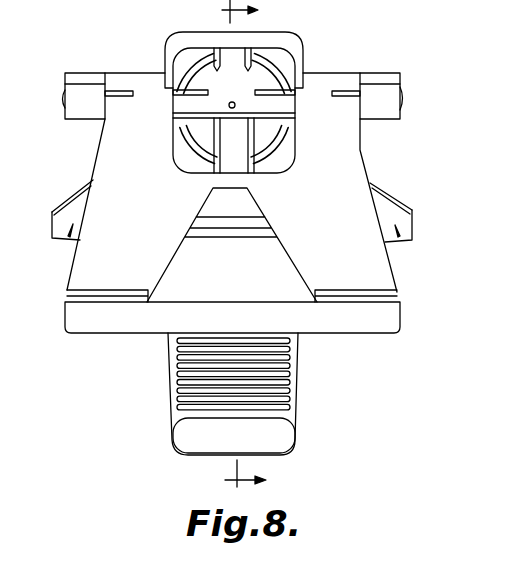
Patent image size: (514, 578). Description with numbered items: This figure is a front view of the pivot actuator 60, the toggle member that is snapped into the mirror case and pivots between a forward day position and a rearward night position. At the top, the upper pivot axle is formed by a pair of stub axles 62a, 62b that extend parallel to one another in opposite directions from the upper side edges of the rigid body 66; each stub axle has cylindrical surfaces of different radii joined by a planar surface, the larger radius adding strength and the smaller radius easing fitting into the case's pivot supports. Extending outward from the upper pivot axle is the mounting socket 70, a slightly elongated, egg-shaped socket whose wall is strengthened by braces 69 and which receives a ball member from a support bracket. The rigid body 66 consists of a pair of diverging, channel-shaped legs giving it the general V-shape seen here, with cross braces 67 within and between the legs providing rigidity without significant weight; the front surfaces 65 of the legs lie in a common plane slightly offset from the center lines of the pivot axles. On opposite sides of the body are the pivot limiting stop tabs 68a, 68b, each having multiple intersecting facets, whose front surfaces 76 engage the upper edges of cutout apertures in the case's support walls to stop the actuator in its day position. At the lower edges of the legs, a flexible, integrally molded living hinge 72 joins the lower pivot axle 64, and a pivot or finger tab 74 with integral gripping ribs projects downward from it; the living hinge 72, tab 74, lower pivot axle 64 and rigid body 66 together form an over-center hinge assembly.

The pivot actuator 60 is at (413, 20).
The stub axle 62a is at (380, 103).
The stub axle 62b is at (82, 103).
The lower pivot axle 64 is at (122, 322).
The front surfaces of the diverging legs 65 is at (143, 228).
The rigid body 66 is at (95, 173).
The strengthening ribs or cross braces 67 is at (228, 232).
The pivot limiting stop tab 68a is at (397, 232).
The pivot limiting stop tab 68b is at (62, 240).
The braces 69 is at (213, 140).
The mounting socket 70 is at (262, 57).
The living hinge 72 is at (67, 303).
The pivot or finger tab 74 is at (298, 378).
The front surfaces of stop tabs 76 is at (65, 213).